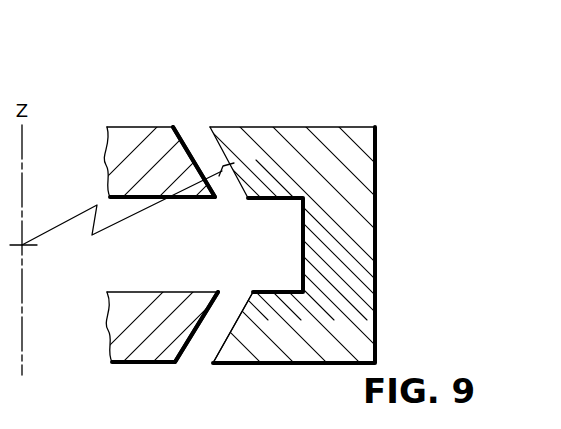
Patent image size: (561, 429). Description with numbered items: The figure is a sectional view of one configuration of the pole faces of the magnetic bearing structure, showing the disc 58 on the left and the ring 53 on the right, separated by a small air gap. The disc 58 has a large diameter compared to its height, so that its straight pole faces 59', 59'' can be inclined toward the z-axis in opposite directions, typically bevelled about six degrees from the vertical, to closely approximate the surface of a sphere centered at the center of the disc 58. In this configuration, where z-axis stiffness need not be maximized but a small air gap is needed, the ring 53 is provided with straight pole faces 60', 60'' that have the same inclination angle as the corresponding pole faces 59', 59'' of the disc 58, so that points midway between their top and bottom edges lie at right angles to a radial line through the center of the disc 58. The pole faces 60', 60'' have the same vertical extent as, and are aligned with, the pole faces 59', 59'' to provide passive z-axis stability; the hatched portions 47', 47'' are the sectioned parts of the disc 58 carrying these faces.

The first clamping jaw 47' is at (176, 157).
The second clamping jaw 47'' is at (175, 328).
The ring 53 is at (362, 252).
The disc 58 is at (194, 130).
The pole face 59' is at (172, 144).
The pole face 59'' is at (176, 348).
The pole face 60' is at (229, 144).
The pole face 60'' is at (233, 348).